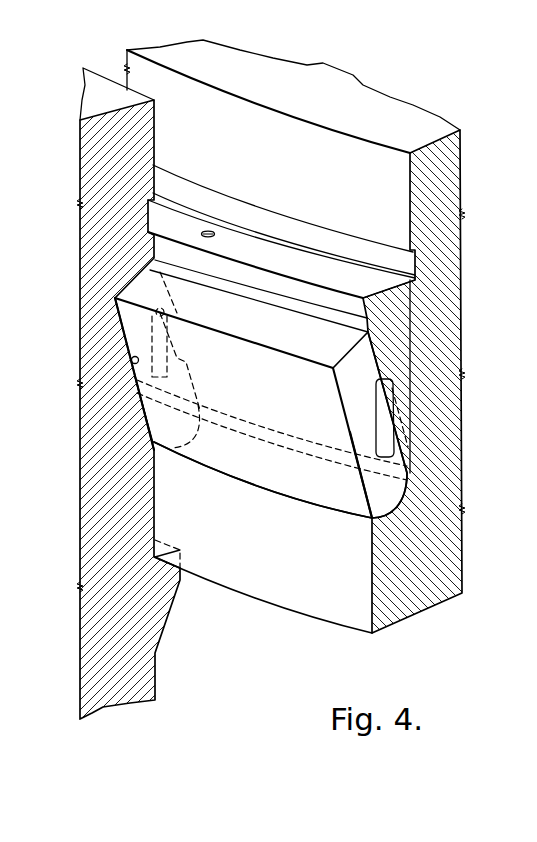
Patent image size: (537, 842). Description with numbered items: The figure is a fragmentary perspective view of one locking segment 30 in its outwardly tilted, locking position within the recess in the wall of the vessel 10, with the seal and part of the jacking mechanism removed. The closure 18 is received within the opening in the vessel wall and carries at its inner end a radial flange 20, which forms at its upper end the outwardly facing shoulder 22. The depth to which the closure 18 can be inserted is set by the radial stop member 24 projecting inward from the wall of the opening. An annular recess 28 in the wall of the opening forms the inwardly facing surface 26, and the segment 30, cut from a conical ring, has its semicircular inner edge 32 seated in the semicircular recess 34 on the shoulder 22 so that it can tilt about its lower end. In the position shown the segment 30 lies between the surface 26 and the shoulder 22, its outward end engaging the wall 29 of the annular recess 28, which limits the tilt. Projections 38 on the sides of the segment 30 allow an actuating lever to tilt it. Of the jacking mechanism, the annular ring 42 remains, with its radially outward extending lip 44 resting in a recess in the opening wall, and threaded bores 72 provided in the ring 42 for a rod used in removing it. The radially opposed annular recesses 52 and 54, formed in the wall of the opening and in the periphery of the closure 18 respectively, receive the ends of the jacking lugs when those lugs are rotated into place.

The vessel 10 is at (100, 443).
The closure 18 is at (463, 178).
The radial flange 20 is at (310, 616).
The outwardly facing shoulder 22 is at (407, 480).
The radial stop member 24 is at (180, 572).
The inwardly facing surface 26 is at (117, 287).
The annular recess 28 is at (128, 347).
The wall of annular recess 29 is at (133, 363).
The locking segment 30 is at (130, 321).
The semicircular inner edge 32 is at (302, 500).
The semicircular recess 34 is at (372, 517).
The projection 38 is at (378, 403).
The annular ring 42 is at (400, 317).
The radially outward extending lip 44 is at (303, 293).
The annular recess in wall of opening 52 is at (148, 213).
The annular recess in periphery of closure 54 is at (312, 228).
The threaded bore 72 is at (218, 237).